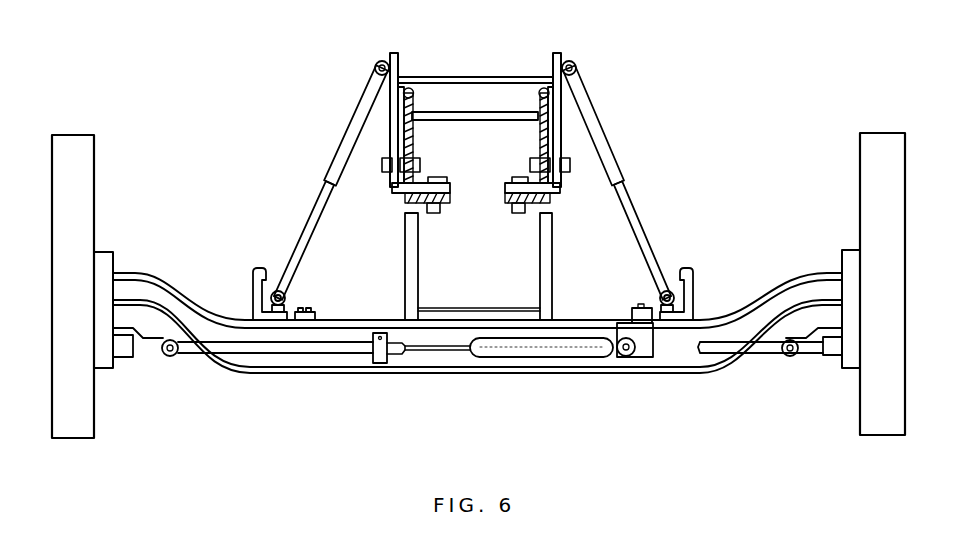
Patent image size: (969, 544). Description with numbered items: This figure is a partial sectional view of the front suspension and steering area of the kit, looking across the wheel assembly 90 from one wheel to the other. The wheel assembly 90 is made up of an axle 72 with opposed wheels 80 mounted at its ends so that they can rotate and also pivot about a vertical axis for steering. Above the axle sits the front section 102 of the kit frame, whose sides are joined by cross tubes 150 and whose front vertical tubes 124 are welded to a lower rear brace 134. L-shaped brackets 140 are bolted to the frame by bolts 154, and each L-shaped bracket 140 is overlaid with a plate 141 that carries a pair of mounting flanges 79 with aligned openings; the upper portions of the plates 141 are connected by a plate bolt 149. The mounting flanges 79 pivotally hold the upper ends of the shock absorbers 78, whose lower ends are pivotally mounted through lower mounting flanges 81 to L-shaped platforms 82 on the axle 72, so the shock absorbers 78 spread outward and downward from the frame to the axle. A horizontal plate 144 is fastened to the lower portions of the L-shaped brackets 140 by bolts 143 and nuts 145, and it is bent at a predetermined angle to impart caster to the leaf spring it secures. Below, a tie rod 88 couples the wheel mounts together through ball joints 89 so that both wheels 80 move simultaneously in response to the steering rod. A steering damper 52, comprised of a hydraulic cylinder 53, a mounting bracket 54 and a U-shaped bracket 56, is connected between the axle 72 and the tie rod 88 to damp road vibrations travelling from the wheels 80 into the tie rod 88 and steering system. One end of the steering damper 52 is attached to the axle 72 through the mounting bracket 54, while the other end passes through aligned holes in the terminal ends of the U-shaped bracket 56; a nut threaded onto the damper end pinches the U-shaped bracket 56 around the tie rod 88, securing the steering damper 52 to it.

The steering damper 52 is at (532, 357).
The hydraulic cylinder 53 is at (585, 348).
The mounting bracket 54 is at (648, 357).
The U-shaped bracket 56 is at (380, 363).
The axle 72 is at (470, 358).
The shock absorber 78 is at (348, 125).
The mounting flange 79 is at (378, 62).
The wheel 80 is at (95, 185).
The lower mounting flange 81 is at (290, 297).
The L-shaped platform 82 is at (248, 285).
The tie rod 88 is at (198, 354).
The ball joint 89 is at (168, 358).
The wheel assembly 90 is at (114, 252).
The front section 102 is at (413, 135).
The front vertical tube 124 is at (405, 285).
The lower rear brace 134 is at (477, 308).
The L-shaped bracket 140 is at (390, 150).
The plate 141 is at (392, 180).
The bolt 143 is at (436, 213).
The horizontal plate 144 is at (405, 203).
The nut 145 is at (445, 177).
The plate bolt 149 is at (450, 77).
The cross tube 150 is at (482, 112).
The bolt 154 is at (382, 164).